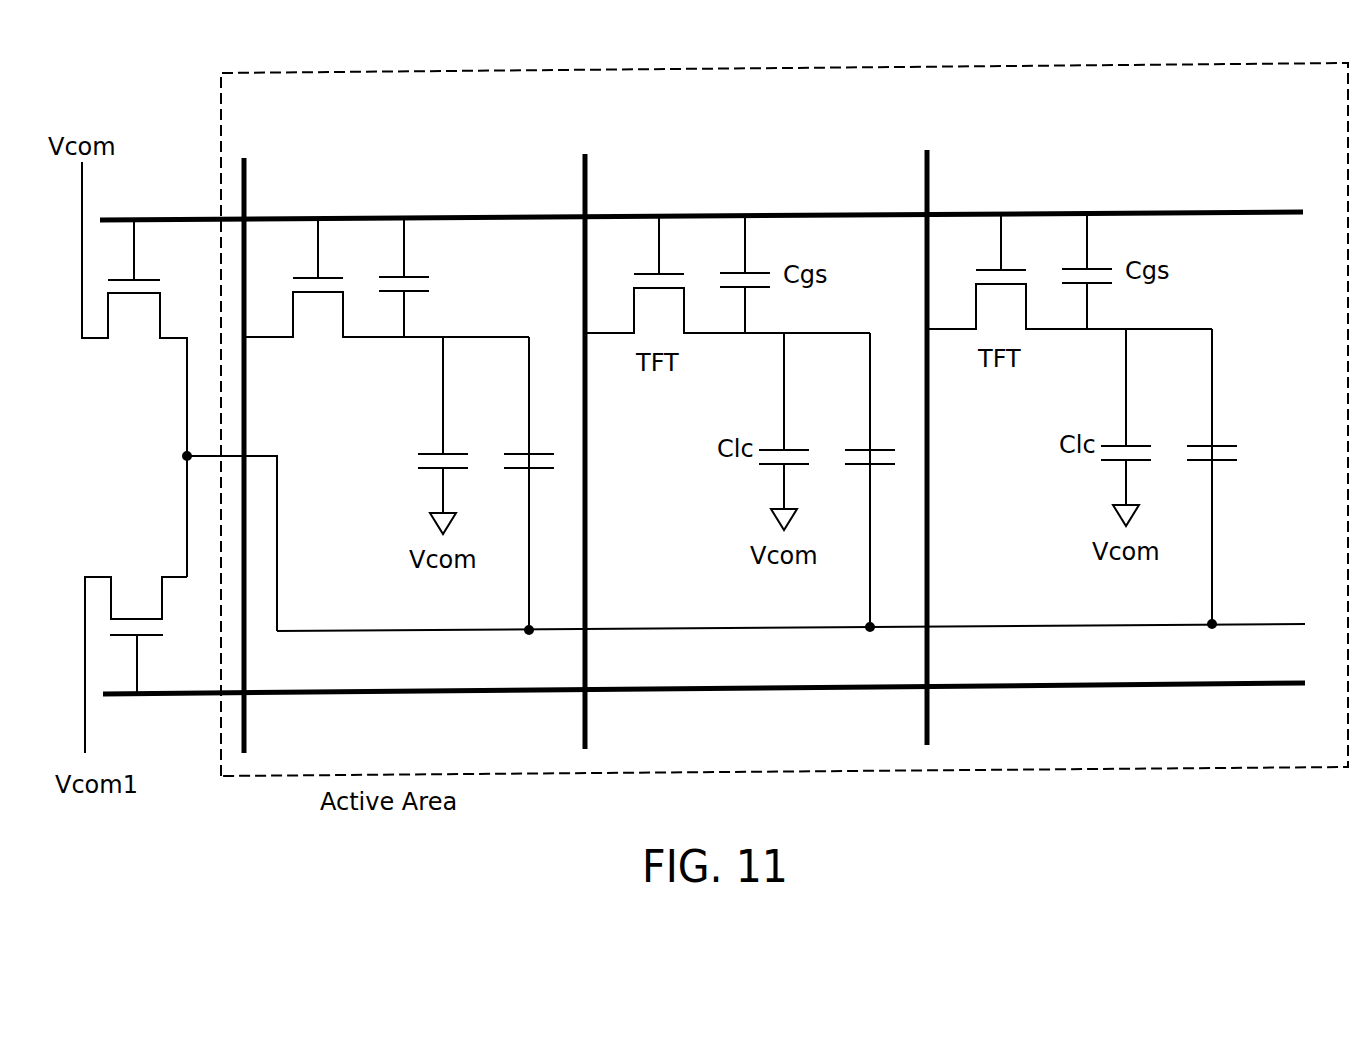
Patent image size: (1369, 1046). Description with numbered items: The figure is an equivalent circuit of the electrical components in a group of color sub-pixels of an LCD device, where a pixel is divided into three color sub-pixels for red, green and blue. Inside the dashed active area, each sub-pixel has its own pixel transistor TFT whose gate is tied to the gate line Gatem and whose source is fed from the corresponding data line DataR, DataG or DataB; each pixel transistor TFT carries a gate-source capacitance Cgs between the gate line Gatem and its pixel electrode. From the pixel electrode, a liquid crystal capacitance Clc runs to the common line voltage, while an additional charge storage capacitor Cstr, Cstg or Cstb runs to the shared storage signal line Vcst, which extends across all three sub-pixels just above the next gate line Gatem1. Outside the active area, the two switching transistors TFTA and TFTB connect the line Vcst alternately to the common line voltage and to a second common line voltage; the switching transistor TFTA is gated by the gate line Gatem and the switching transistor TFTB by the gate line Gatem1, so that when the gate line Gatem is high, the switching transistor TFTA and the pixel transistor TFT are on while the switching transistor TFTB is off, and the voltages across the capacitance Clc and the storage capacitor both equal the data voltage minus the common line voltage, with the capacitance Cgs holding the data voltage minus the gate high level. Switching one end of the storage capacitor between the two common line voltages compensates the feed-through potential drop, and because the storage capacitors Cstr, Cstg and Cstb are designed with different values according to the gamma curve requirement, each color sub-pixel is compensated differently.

The switching TFT A TFTA is at (134, 309).
The switching TFT B TFTB is at (136, 644).
The pixel TFT is at (386, 300).
The gate-source capacitance Cgs is at (433, 278).
The liquid crystal capacitance Clc is at (422, 435).
The storage capacitor of red sub-pixel Cstr is at (513, 485).
The storage capacitor of green sub-pixel Cstg is at (849, 482).
The storage capacitor of blue sub-pixel Cstb is at (1229, 478).
The storage capacitor signal line Vcst is at (791, 646).
The gate line m Gatem is at (701, 194).
The gate line m+1 Gatem1 is at (704, 704).
The red data line DataR is at (286, 435).
The green data line DataG is at (633, 432).
The blue data line DataB is at (978, 429).